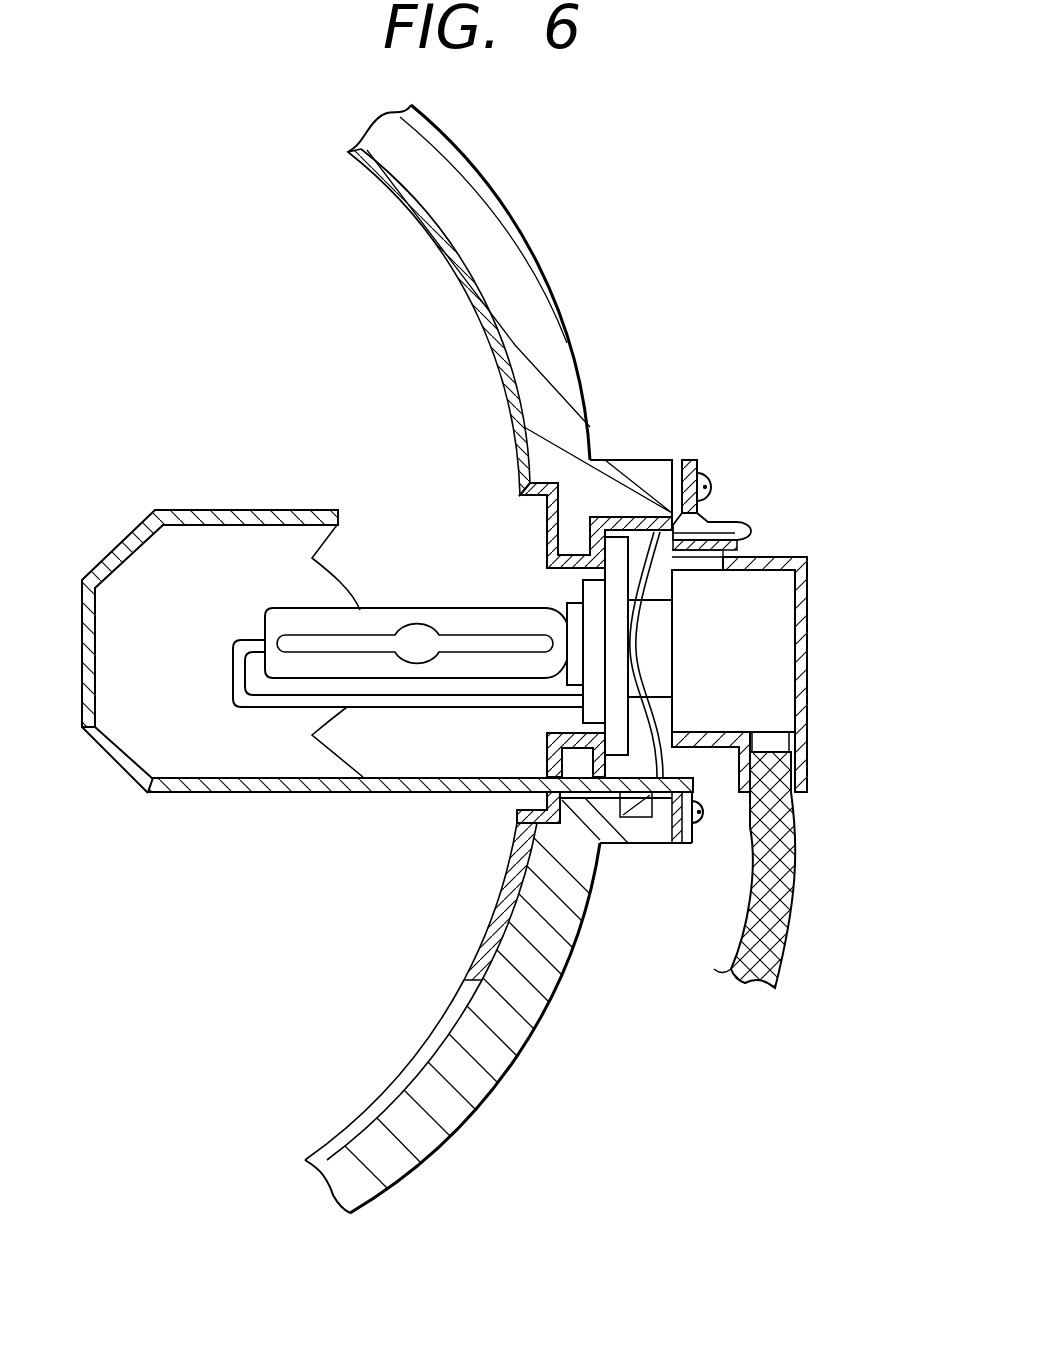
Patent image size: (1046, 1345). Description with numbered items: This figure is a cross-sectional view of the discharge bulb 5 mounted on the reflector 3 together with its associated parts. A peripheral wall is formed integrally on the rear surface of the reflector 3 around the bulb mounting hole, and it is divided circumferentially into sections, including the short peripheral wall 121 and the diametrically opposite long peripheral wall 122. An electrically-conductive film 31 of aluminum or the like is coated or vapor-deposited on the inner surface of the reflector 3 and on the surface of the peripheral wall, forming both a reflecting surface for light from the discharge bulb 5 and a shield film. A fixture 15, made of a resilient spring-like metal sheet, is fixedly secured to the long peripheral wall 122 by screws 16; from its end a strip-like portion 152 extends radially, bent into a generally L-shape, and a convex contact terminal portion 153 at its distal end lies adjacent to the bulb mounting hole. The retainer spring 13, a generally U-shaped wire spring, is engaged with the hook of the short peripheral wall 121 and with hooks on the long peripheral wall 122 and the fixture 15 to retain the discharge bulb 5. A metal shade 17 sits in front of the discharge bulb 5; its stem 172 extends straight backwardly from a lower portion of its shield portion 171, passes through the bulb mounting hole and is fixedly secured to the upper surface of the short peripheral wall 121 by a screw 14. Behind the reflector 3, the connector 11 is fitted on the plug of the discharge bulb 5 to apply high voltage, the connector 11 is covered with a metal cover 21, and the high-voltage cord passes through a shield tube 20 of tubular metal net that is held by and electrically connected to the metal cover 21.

The reflector 3 is at (487, 205).
The electrically-conductive film 31 is at (400, 200).
The long peripheral wall 122 is at (643, 460).
The fixture 15 is at (693, 465).
The screw 16 is at (710, 497).
The strip-like portion 152 is at (752, 530).
The contact terminal portion 153 is at (757, 548).
The metal cover 21 is at (808, 652).
The connector 11 is at (782, 712).
The shield tube 20 is at (790, 885).
The screw 14 is at (700, 823).
The short peripheral wall 121 is at (642, 845).
The shade 17 is at (215, 796).
The stem 172 is at (400, 797).
The shield portion 171 is at (105, 755).
The discharge bulb 5 is at (297, 617).
The retainer spring 13 is at (637, 667).